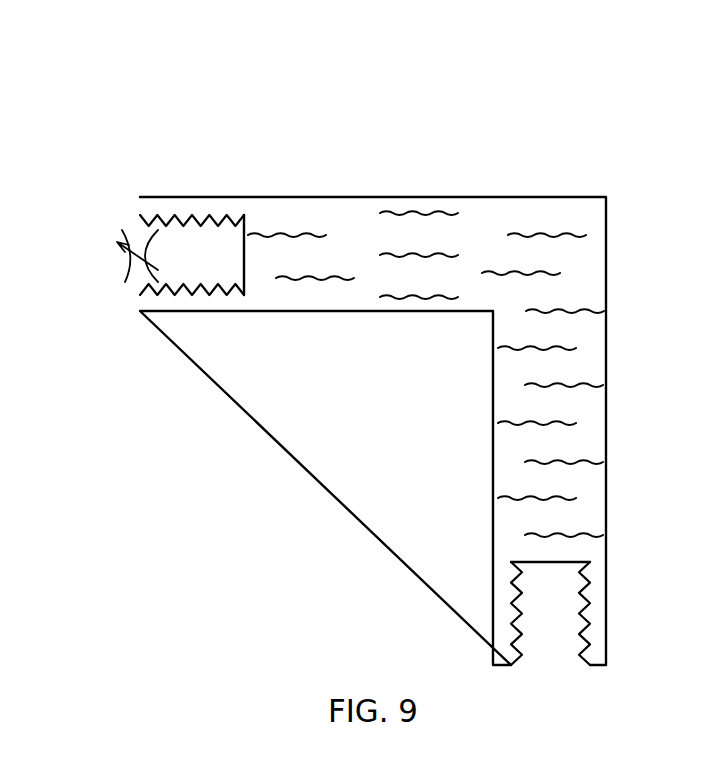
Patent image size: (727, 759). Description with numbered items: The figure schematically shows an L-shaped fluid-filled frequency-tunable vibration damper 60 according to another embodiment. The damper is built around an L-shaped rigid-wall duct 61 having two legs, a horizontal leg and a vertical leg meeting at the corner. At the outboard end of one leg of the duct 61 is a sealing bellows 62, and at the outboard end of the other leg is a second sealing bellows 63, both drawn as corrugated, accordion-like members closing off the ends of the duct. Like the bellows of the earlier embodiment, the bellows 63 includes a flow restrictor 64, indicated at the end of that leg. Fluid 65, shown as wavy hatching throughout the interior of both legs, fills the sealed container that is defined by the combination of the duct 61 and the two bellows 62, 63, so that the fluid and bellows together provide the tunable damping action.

The L-shaped fluid-filled frequency-tunable vibration damper 60 is at (366, 370).
The L-shaped rigid-wall duct 61 is at (366, 197).
The sealing bellows 62 is at (590, 620).
The sealing bellows 63 is at (205, 292).
The flow restrictor 64 is at (131, 268).
The fluid 65 is at (522, 235).